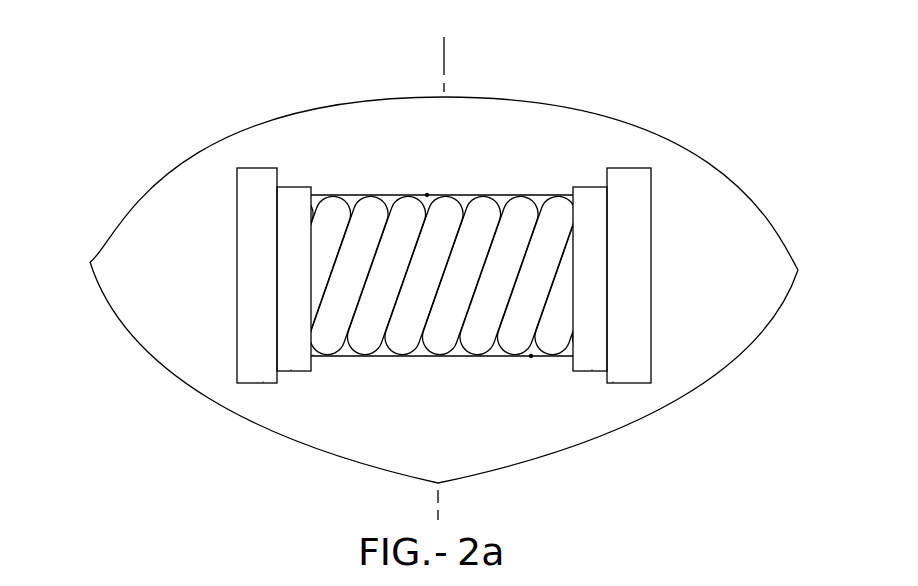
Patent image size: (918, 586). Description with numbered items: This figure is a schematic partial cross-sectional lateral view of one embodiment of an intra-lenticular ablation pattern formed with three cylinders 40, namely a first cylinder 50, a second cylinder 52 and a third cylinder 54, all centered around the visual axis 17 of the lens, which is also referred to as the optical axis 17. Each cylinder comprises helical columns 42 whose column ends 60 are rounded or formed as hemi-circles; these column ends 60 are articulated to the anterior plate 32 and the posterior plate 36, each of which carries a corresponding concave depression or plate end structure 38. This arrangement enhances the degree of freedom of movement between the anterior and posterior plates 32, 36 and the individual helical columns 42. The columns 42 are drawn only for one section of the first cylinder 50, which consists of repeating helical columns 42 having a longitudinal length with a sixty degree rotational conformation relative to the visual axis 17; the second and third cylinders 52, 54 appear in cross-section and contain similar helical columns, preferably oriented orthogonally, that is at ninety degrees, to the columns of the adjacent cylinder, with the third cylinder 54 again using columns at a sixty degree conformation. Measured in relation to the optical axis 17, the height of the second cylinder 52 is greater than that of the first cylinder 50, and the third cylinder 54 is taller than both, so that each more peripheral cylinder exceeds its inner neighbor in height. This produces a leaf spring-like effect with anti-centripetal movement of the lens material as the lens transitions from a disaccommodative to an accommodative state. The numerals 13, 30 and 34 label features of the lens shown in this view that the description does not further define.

The ball 13 is at (422, 280).
The visual axis 17 is at (446, 63).
The cover 30 is at (317, 111).
The anterior plate 32 is at (384, 195).
The lower cover portion 34 is at (558, 453).
The posterior plate 36 is at (462, 358).
The plate end structure 38 is at (427, 191).
The cylinders 40 is at (264, 388).
The helical columns 42 is at (316, 357).
The first cylinder 50 is at (492, 196).
The second cylinder 52 is at (290, 243).
The third cylinder 54 is at (250, 275).
The column ends 60 is at (526, 196).